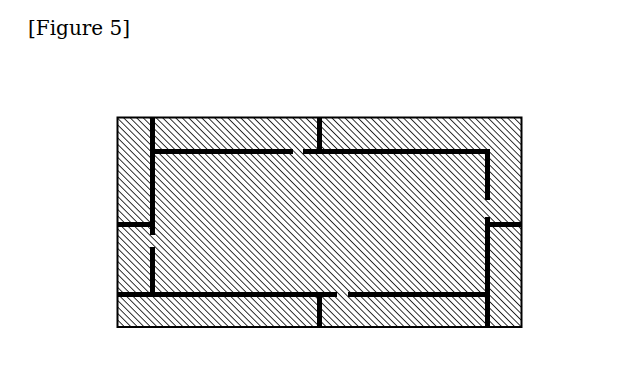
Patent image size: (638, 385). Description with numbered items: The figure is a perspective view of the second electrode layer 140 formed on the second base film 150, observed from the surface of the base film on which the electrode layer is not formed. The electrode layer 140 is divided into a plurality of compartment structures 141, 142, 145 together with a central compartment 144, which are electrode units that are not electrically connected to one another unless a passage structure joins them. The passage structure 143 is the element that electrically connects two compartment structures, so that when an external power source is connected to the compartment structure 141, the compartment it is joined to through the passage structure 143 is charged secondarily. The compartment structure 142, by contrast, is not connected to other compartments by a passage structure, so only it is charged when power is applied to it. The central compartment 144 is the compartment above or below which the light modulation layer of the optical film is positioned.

The second electrode layer 140 is at (117, 163).
The compartment structure 141 is at (415, 327).
The compartment structure 142 is at (208, 327).
The passage structure 143 is at (125, 254).
The central compartment 144 is at (304, 320).
The compartment structure 145 is at (238, 118).
The second base film 150 is at (522, 153).